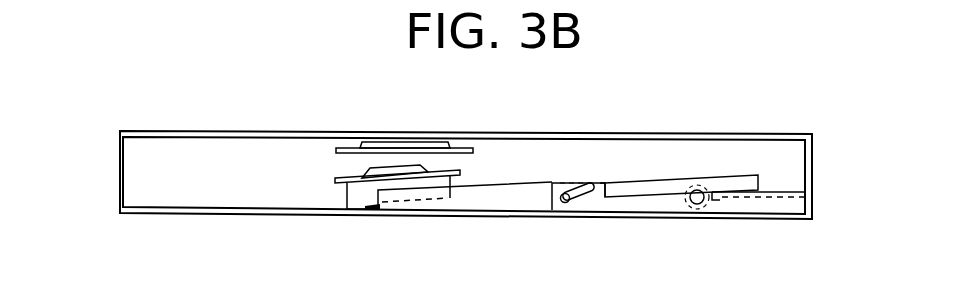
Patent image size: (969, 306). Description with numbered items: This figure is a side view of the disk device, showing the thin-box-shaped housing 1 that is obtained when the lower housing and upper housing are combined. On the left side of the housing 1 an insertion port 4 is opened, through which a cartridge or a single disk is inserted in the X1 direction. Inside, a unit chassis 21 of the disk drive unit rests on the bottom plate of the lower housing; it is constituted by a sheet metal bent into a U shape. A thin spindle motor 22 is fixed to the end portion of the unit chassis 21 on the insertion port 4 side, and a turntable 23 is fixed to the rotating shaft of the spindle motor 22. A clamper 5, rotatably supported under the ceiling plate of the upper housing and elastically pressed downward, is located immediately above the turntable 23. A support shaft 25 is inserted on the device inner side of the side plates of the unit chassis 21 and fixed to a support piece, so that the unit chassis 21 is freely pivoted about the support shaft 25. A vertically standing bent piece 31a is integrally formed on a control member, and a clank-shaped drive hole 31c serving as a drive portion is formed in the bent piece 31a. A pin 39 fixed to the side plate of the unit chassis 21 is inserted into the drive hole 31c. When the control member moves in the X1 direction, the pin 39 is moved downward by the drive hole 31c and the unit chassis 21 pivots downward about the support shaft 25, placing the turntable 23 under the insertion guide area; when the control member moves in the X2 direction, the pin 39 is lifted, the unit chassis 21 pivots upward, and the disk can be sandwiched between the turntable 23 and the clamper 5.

The housing 1 is at (787, 126).
The insertion port 4 is at (110, 187).
The clamper 5 is at (340, 147).
The unit chassis 21 is at (489, 200).
The spindle motor 22 is at (368, 195).
The turntable 23 is at (336, 180).
The support shaft 25 is at (699, 190).
The bent piece 31a is at (643, 200).
The drive hole 31c is at (594, 182).
The pin 39 is at (561, 212).